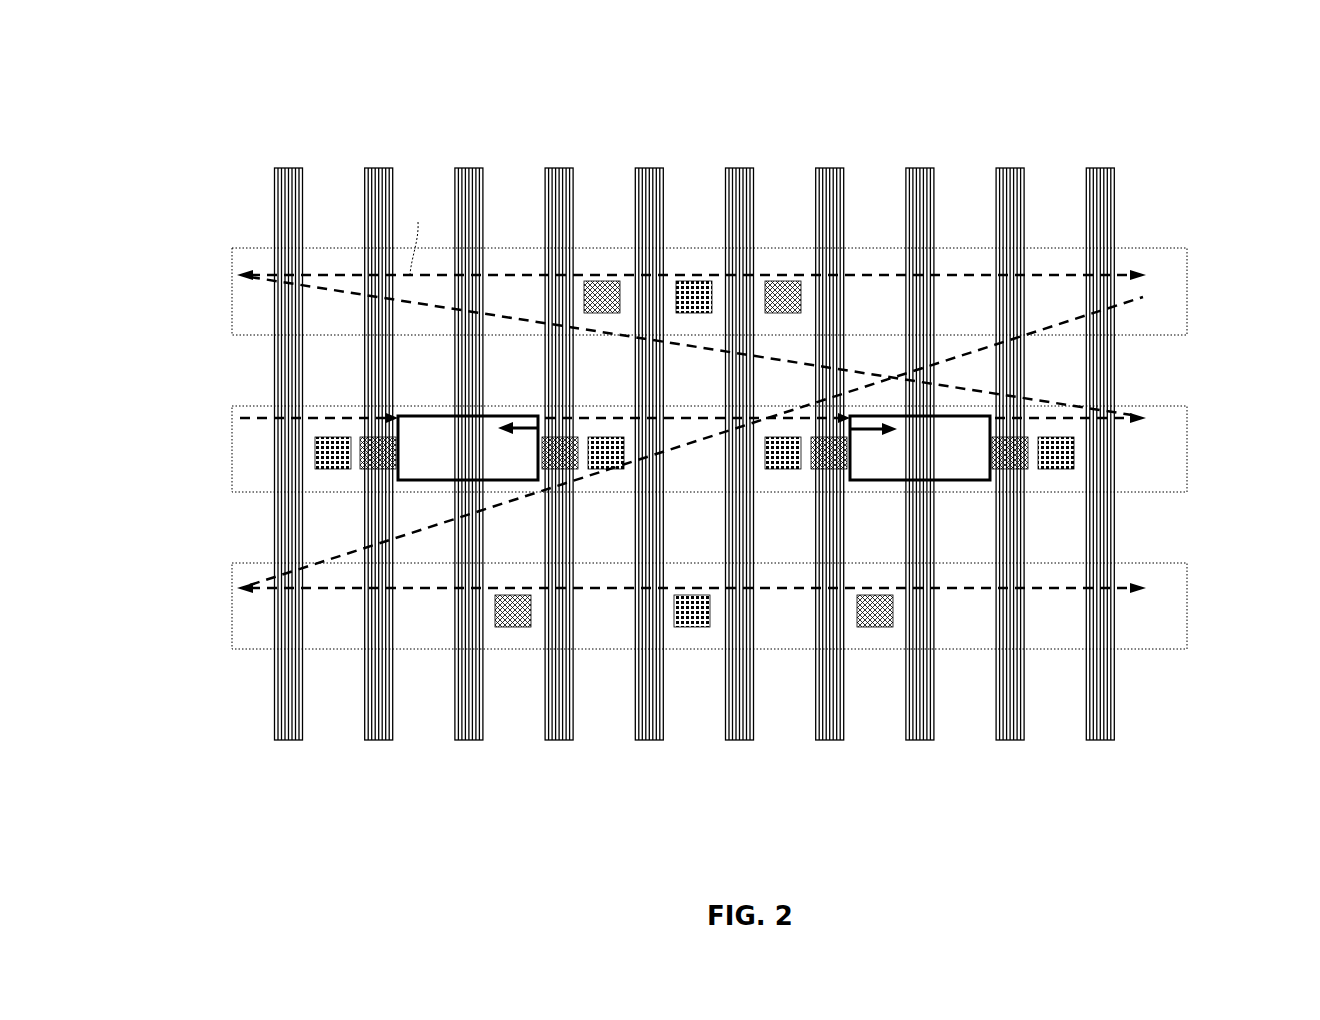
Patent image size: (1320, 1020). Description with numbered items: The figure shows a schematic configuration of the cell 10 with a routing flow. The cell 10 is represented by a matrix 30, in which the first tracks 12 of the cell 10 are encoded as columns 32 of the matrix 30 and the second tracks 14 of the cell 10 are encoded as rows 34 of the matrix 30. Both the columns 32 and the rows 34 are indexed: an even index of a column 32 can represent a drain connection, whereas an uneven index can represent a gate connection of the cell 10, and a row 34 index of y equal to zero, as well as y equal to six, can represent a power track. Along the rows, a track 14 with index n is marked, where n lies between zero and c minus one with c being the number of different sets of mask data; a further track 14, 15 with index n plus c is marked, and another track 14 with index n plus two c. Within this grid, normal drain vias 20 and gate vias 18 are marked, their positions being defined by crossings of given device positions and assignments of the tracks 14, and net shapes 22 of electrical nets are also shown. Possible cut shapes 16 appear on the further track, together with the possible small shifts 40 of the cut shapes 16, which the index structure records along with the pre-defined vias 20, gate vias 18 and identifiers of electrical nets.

The cell 10 is at (893, 64).
The first tracks 12 is at (275, 203).
The second tracks 14 is at (232, 262).
The further track 15 is at (232, 425).
The cut shapes 16 is at (401, 416).
The gate vias 18 is at (388, 470).
The drain vias 20 is at (600, 280).
The net shapes 22 is at (690, 280).
The matrix 30 is at (1220, 118).
The columns 32 is at (182, 122).
The rows 34 is at (1214, 742).
The shifts 40 is at (519, 426).